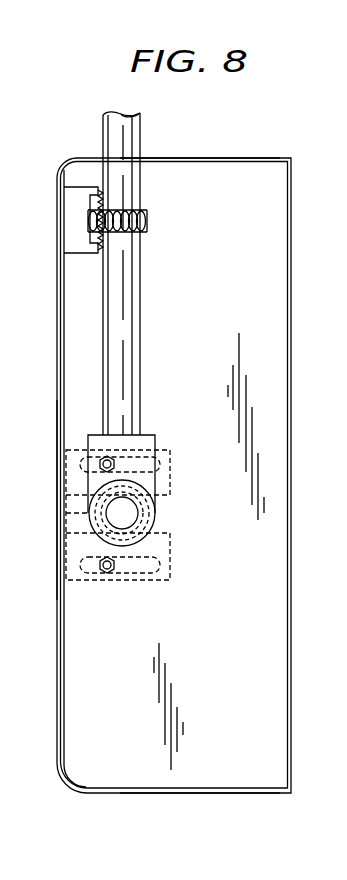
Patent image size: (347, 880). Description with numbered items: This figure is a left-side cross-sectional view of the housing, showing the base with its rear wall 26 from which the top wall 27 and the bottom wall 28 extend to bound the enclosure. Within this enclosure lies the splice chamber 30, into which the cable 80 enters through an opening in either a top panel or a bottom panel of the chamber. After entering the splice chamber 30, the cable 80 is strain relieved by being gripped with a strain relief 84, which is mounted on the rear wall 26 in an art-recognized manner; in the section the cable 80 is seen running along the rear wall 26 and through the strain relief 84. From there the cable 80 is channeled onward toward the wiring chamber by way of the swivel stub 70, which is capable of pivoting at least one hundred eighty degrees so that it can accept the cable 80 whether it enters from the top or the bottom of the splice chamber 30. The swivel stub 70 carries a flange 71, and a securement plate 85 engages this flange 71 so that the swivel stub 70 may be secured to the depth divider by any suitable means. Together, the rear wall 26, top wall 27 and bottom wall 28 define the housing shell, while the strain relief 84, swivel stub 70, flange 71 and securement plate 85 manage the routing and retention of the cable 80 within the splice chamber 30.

The rear wall 26 is at (57, 602).
The top wall 27 is at (215, 158).
The bottom wall 28 is at (178, 795).
The splice chamber 30 is at (258, 373).
The swivel stub 70 is at (156, 437).
The flange 71 is at (157, 514).
The cable 80 is at (140, 318).
The strain relief 84 is at (98, 192).
The securement plate 85 is at (172, 555).